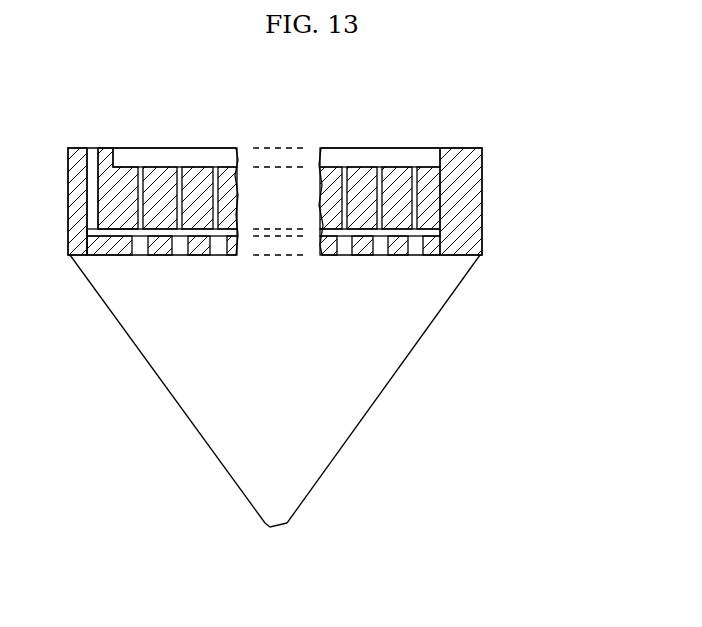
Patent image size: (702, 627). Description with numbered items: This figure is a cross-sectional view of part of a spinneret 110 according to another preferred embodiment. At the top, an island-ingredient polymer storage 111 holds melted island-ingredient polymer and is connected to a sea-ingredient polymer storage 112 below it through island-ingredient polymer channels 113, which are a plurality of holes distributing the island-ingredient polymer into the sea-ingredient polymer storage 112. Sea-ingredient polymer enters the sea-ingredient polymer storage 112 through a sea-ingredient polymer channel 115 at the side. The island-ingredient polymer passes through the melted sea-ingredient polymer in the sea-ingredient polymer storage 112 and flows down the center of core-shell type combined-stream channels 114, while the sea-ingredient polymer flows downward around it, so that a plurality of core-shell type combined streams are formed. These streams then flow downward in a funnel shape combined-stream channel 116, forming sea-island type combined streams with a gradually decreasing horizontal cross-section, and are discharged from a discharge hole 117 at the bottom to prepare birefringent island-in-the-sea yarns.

The spinneret 110 is at (426, 144).
The island-ingredient polymer storage 111 is at (363, 157).
The sea-ingredient polymer storage 112 is at (443, 217).
The island-ingredient polymer channels 113 is at (417, 190).
The core-shell type combined-stream channels 114 is at (418, 249).
The sea-ingredient polymer channel 115 is at (93, 148).
The funnel shape combined-stream channel 116 is at (423, 318).
The discharge hole 117 is at (272, 523).